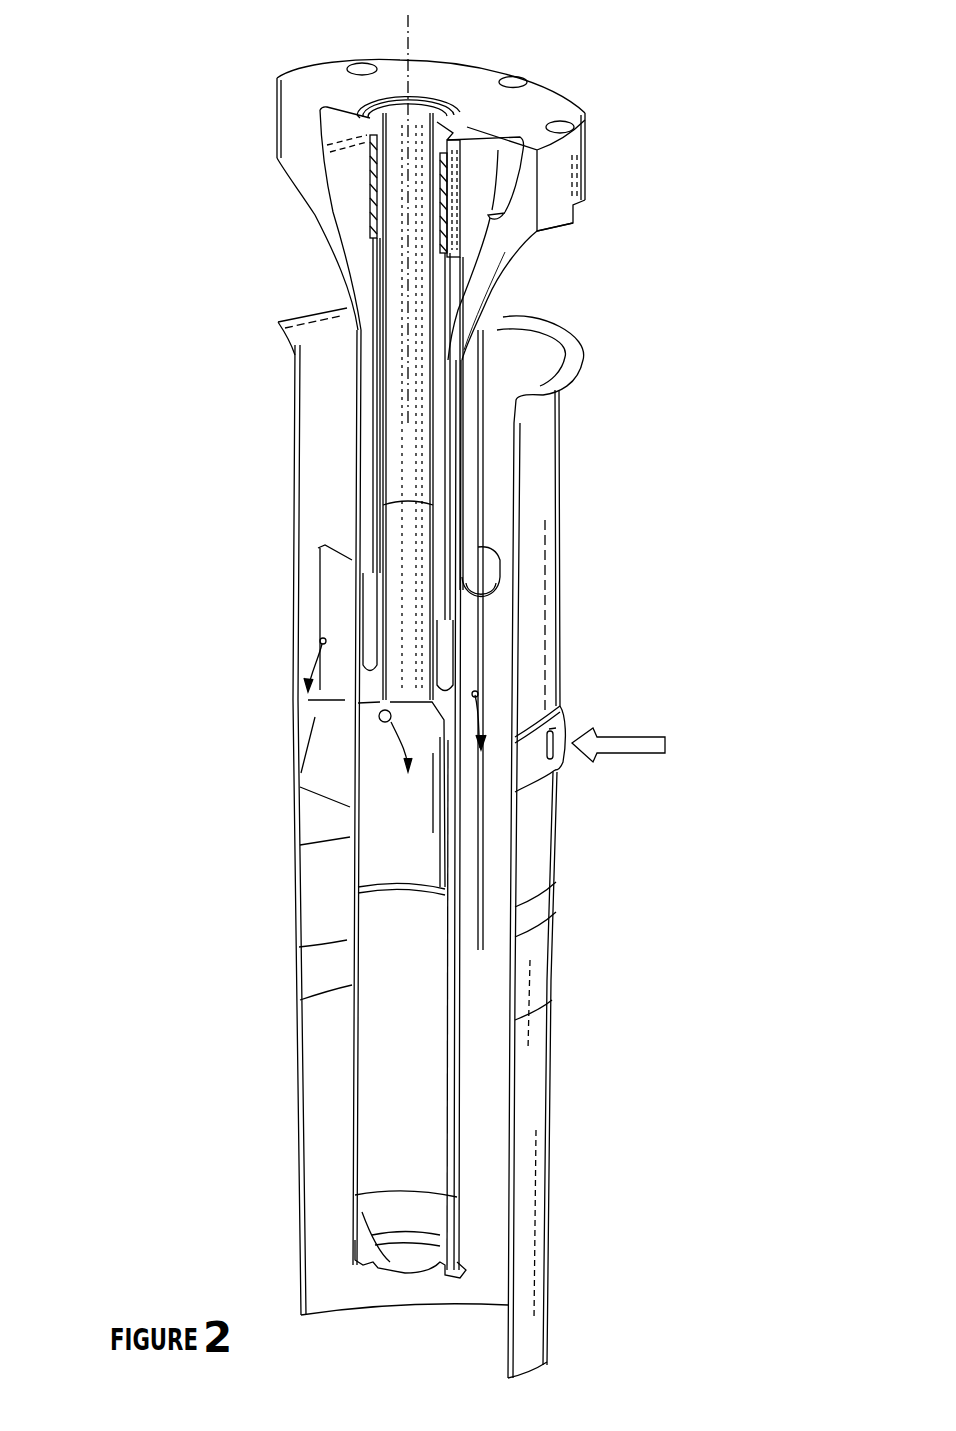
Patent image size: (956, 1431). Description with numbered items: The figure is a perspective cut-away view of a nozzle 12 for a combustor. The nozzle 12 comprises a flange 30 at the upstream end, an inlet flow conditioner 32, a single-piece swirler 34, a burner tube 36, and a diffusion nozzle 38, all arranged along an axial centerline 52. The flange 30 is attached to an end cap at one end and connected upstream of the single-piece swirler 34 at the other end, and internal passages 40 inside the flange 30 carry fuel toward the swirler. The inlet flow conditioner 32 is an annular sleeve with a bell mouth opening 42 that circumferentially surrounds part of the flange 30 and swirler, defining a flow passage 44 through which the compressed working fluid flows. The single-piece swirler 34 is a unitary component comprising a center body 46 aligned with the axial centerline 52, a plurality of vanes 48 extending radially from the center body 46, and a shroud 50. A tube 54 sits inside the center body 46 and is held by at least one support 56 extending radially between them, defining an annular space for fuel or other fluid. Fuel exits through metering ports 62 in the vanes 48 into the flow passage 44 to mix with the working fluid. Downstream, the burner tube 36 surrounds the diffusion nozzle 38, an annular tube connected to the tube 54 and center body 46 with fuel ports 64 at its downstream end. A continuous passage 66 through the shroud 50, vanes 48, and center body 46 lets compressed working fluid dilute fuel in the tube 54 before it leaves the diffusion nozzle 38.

The nozzle 12 is at (130, 272).
The flange 30 is at (588, 168).
The inlet flow conditioner 32 is at (565, 480).
The single-piece swirler 34 is at (333, 724).
The burner tube 36 is at (552, 1195).
The diffusion nozzle 38 is at (355, 1050).
The internal passages 40 is at (340, 160).
The bell mouth opening 42 is at (577, 325).
The flow passage 44 is at (325, 440).
The center body 46 is at (455, 560).
The vanes 48 is at (500, 583).
The shroud 50 is at (556, 850).
The axial centerline 52 is at (406, 47).
The tube 54 is at (380, 521).
The support 56 is at (370, 537).
The metering ports 62 is at (320, 640).
The fuel ports 64 is at (395, 1228).
The continuous passage 66 is at (380, 718).